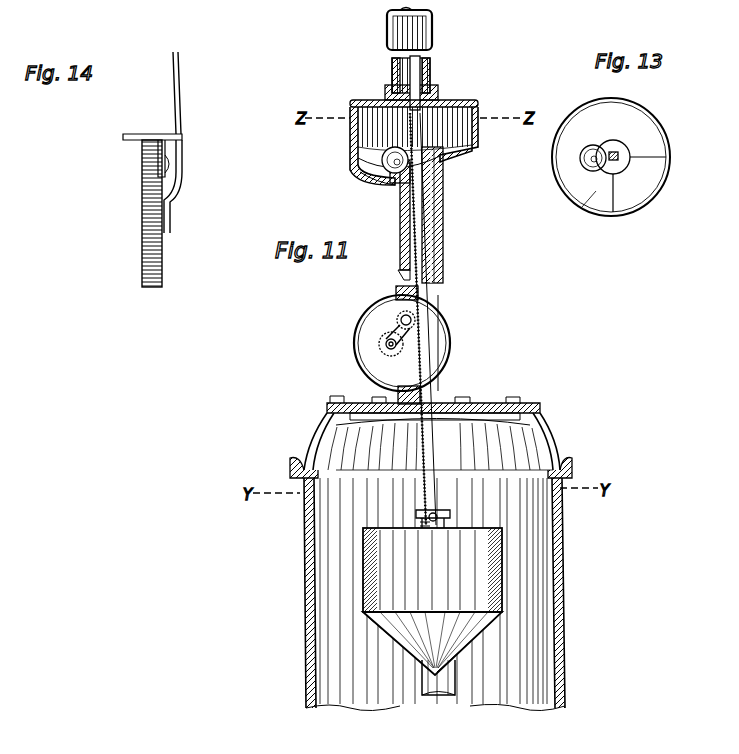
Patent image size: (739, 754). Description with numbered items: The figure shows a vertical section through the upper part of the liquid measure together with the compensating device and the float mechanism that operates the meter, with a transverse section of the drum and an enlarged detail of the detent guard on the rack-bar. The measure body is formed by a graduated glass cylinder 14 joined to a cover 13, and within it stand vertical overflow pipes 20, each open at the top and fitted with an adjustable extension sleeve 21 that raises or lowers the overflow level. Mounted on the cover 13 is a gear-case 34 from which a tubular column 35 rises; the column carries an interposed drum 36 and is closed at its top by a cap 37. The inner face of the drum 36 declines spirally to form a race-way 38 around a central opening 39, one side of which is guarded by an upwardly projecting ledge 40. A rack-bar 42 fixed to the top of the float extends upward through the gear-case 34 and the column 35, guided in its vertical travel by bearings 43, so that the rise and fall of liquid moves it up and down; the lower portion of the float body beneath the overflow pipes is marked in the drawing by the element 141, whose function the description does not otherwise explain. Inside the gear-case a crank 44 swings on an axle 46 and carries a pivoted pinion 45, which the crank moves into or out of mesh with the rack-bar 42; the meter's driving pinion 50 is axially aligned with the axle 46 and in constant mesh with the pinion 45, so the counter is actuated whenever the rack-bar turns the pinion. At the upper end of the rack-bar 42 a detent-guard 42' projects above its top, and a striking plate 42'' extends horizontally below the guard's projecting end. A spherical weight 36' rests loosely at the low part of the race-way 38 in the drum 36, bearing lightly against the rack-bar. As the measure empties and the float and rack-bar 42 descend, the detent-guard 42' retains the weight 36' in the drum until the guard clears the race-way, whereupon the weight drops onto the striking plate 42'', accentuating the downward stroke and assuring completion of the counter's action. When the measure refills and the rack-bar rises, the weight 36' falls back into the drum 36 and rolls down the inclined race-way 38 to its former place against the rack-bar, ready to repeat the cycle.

In FIG. 11, the cover 13 is at (322, 437).
In FIG. 11, the glass cylinder 14 is at (312, 592).
In FIG. 11, the overflow pipe 20 is at (455, 525).
In FIG. 11, the adjustable extension sleeve 21 is at (440, 510).
In FIG. 11, the gear-case 34 is at (452, 328).
In FIG. 11, the tubular column 35 is at (432, 40).
In FIG. 11, the drum 36 is at (398, 142).
In FIG. 13, the drum 36 is at (626, 157).
In FIG. 11, the spherical weight 36' is at (376, 164).
In FIG. 11, the cap 37 is at (387, 25).
In FIG. 11, the race-way 38 is at (373, 180).
In FIG. 13, the race-way 38 is at (574, 186).
In FIG. 11, the central opening 39 is at (432, 148).
In FIG. 13, the central opening 39 is at (621, 163).
In FIG. 11, the ledge 40 is at (388, 150).
In FIG. 13, the ledge 40 is at (603, 144).
In FIG. 11, the rack-bar 42 is at (443, 319).
In FIG. 13, the rack-bar 42 is at (629, 142).
In FIG. 14, the rack-bar 42 is at (170, 161).
In FIG. 11, the detent-guard 42' is at (444, 74).
In FIG. 14, the striking plate 42'' is at (139, 193).
In FIG. 11, the bearings 43 is at (396, 291).
In FIG. 11, the crank 44 is at (400, 320).
In FIG. 11, the pinion 45 is at (404, 314).
In FIG. 11, the axle 46 is at (392, 350).
In FIG. 11, the driving pinion 50 is at (378, 348).
In FIG. 11, the cone ribs 141 is at (396, 625).